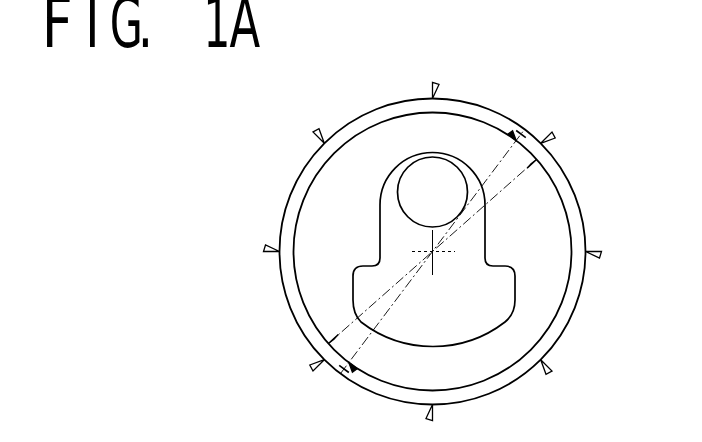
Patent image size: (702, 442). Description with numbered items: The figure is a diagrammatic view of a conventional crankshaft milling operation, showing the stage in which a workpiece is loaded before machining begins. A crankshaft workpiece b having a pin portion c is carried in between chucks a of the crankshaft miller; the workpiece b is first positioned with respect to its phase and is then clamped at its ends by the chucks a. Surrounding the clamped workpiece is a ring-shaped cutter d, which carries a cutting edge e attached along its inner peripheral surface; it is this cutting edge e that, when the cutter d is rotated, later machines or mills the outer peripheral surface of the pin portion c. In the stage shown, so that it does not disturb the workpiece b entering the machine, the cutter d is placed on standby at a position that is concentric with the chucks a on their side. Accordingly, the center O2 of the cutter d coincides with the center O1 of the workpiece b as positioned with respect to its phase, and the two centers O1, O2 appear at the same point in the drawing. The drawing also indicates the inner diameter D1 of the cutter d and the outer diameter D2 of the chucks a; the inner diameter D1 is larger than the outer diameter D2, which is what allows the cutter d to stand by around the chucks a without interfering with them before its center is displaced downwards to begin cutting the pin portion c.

The chucks a is at (576, 222).
The crankshaft workpiece b is at (513, 295).
The pin portion c is at (410, 185).
The ring-shaped cutter d is at (580, 193).
The cutting edge e is at (440, 83).
The inner diameter of the cutter D1 is at (432, 251).
The outer diameter of the chucks D2 is at (435, 251).
The center of the workpiece O1 is at (436, 255).
The center of the cutter O2 is at (462, 274).